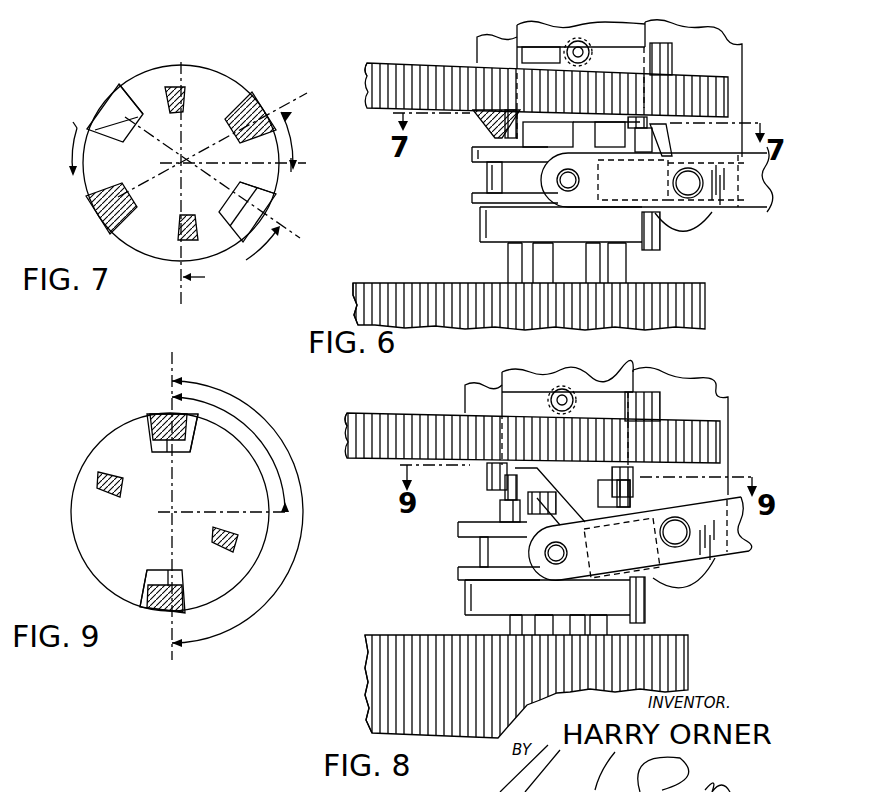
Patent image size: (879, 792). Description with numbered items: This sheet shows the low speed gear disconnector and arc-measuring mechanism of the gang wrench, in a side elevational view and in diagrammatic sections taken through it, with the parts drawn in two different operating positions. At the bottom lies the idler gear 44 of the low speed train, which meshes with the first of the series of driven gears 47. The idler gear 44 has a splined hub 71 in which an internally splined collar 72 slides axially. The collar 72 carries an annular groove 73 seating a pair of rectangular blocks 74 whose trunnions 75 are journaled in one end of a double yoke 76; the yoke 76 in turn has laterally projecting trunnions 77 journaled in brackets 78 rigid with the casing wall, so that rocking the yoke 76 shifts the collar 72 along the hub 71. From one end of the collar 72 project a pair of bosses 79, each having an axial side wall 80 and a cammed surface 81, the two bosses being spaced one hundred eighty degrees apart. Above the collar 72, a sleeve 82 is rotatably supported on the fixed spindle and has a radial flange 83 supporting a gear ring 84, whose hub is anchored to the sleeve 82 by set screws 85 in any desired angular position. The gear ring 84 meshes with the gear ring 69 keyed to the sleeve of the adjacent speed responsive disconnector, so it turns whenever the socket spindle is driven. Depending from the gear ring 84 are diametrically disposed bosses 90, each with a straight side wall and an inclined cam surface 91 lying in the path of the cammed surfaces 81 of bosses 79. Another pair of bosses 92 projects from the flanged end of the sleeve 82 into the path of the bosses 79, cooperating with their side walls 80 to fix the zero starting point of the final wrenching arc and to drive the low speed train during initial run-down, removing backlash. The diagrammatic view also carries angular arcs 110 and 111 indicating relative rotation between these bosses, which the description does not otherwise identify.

In FIG. 6, the idler gear 44 is at (682, 296).
In FIG. 8, the idler gear 44 is at (640, 658).
In FIG. 6, the driven gears 47 is at (389, 292).
In FIG. 8, the driven gears 47 is at (378, 652).
In FIG. 6, the gear ring 69 is at (386, 100).
In FIG. 8, the gear ring 69 is at (386, 460).
In FIG. 6, the splined hub 71 is at (540, 262).
In FIG. 8, the splined hub 71 is at (515, 625).
In FIG. 6, the collar 72 is at (480, 229).
In FIG. 8, the collar 72 is at (469, 598).
In FIG. 6, the annular groove 73 is at (488, 172).
In FIG. 8, the annular groove 73 is at (480, 543).
In FIG. 6, the rectangular blocks 74 is at (527, 203).
In FIG. 8, the rectangular blocks 74 is at (513, 581).
In FIG. 6, the trunnions 75 is at (567, 191).
In FIG. 8, the trunnions 75 is at (556, 568).
In FIG. 6, the double yoke 76 is at (757, 210).
In FIG. 8, the double yoke 76 is at (737, 548).
In FIG. 6, the trunnions 77 is at (705, 224).
In FIG. 8, the trunnions 77 is at (700, 580).
In FIG. 6, the brackets 78 is at (729, 48).
In FIG. 8, the brackets 78 is at (713, 410).
In FIG. 7, the bosses 79 is at (110, 104).
In FIG. 9, the bosses 79 is at (167, 452).
In FIG. 6, the bosses 79 is at (648, 170).
In FIG. 8, the bosses 79 is at (596, 576).
In FIG. 7, the axial side wall 80 is at (131, 88).
In FIG. 9, the axial side wall 80 is at (192, 440).
In FIG. 6, the axial side wall 80 is at (584, 207).
In FIG. 8, the axial side wall 80 is at (508, 508).
In FIG. 7, the cammed surface 81 is at (100, 124).
In FIG. 9, the cammed surface 81 is at (150, 428).
In FIG. 6, the cammed surface 81 is at (664, 152).
In FIG. 8, the cammed surface 81 is at (600, 506).
In FIG. 6, the sleeve 82 is at (636, 30).
In FIG. 8, the sleeve 82 is at (640, 372).
In FIG. 6, the radial flange 83 is at (550, 118).
In FIG. 8, the radial flange 83 is at (600, 450).
In FIG. 6, the gear ring 84 is at (729, 93).
In FIG. 8, the gear ring 84 is at (706, 443).
In FIG. 6, the set screws 85 is at (580, 42).
In FIG. 8, the set screws 85 is at (562, 389).
In FIG. 7, the bosses 90 is at (262, 110).
In FIG. 9, the bosses 90 is at (160, 413).
In FIG. 6, the bosses 90 is at (494, 139).
In FIG. 8, the bosses 90 is at (558, 420).
In FIG. 7, the cam surface 91 is at (287, 131).
In FIG. 9, the cam surface 91 is at (183, 396).
In FIG. 6, the cam surface 91 is at (478, 120).
In FIG. 8, the cam surface 91 is at (512, 484).
In FIG. 7, the bosses 92 is at (177, 86).
In FIG. 9, the bosses 92 is at (97, 478).
In FIG. 6, the bosses 92 is at (650, 60).
In FIG. 8, the bosses 92 is at (487, 477).
In FIG. 7, the angle 110 is at (295, 164).
In FIG. 7, the angle 111 is at (183, 283).